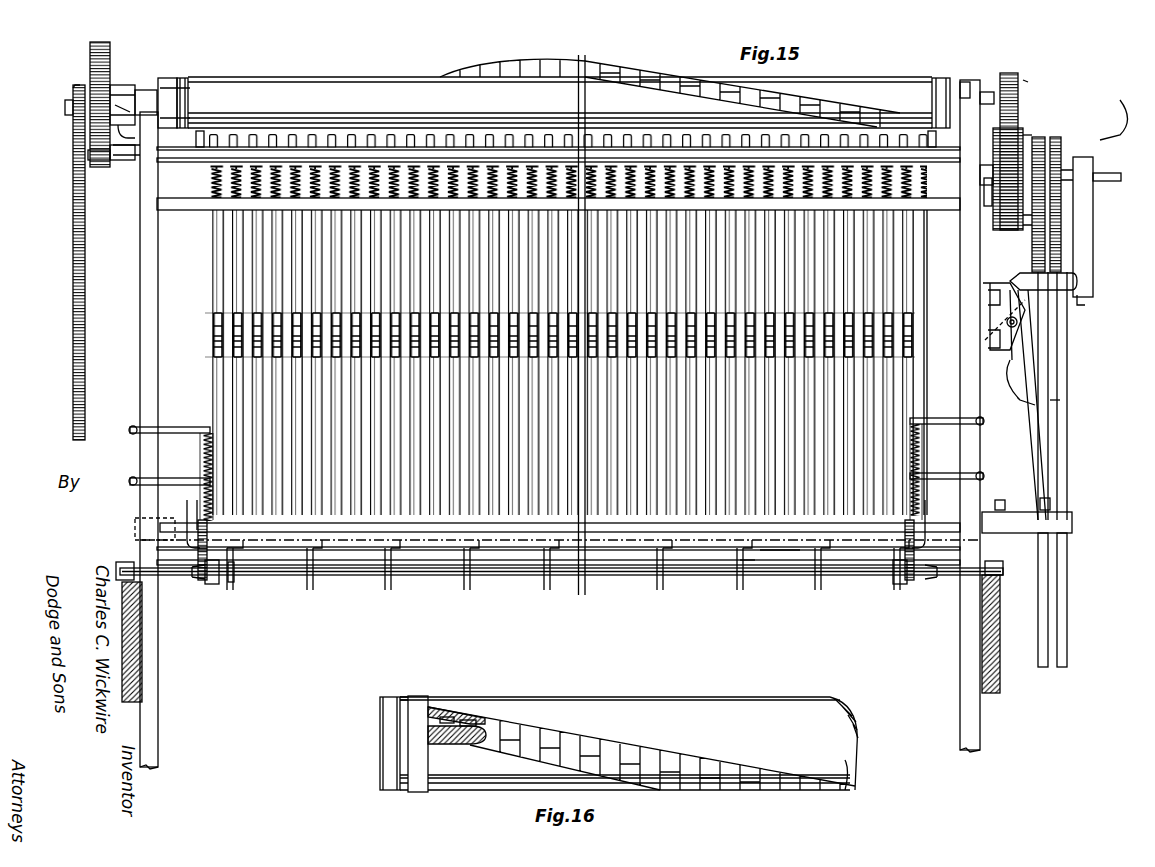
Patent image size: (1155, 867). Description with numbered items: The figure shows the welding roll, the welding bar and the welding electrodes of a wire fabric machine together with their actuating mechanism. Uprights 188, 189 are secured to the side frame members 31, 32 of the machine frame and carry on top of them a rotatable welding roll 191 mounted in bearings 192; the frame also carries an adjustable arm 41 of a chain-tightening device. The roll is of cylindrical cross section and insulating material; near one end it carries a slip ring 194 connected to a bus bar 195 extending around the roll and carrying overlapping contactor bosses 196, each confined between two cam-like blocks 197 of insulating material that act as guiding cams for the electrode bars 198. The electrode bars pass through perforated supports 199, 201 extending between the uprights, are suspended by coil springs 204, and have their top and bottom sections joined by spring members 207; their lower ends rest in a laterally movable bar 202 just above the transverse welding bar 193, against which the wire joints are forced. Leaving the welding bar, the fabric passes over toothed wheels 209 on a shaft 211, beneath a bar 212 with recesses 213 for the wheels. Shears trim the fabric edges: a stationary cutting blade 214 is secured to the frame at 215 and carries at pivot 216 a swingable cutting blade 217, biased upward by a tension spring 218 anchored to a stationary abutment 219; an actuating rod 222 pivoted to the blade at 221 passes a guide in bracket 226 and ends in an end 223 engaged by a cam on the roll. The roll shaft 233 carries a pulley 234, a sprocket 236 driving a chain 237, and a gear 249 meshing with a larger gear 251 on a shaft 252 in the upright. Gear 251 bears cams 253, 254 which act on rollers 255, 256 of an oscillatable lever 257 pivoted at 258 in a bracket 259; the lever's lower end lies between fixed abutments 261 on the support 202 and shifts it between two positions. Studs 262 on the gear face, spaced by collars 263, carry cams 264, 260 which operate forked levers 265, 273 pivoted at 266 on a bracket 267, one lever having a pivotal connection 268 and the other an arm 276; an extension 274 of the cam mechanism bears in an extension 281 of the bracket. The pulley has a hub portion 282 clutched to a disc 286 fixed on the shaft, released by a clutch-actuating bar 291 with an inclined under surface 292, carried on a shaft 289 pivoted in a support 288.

In FIG. 15, the side frame member 31 is at (980, 665).
In FIG. 15, the side frame member 32 is at (140, 660).
In FIG. 15, the frame post 41 is at (158, 719).
In FIG. 15, the upright 188 is at (140, 268).
In FIG. 15, the upright 189 is at (962, 318).
In FIG. 15, the welding roll 191 is at (897, 77).
In FIG. 16, the welding roll 191 is at (702, 698).
In FIG. 15, the bearings 192 is at (186, 82).
In FIG. 15, the welding bar 193 is at (618, 575).
In FIG. 15, the slip ring 194 is at (180, 100).
In FIG. 16, the slip ring 194 is at (418, 792).
In FIG. 16, the bus bar 195 is at (445, 710).
In FIG. 15, the contactor bosses 196 is at (700, 85).
In FIG. 16, the contactor bosses 196 is at (470, 720).
In FIG. 15, the cam-like blocks 197 is at (700, 90).
In FIG. 16, the cam-like blocks 197 is at (660, 735).
In FIG. 15, the electrode bars 198 is at (262, 246).
In FIG. 15, the perforated support 199 is at (330, 150).
In FIG. 15, the perforated support 201 is at (160, 205).
In FIG. 15, the laterally movable bar 202 is at (160, 525).
In FIG. 15, the coil springs 204 is at (206, 183).
In FIG. 15, the spring members 207 is at (212, 331).
In FIG. 15, the toothed wheels 209 is at (310, 585).
In FIG. 15, the shaft 211 is at (828, 568).
In FIG. 15, the bar 212 is at (782, 560).
In FIG. 15, the recesses 213 is at (745, 580).
In FIG. 15, the stationary cutting blade 214 is at (216, 585).
In FIG. 15, the securing point 215 is at (140, 568).
In FIG. 15, the pivot 216 is at (197, 580).
In FIG. 15, the swingable cutting blade 217 is at (207, 528).
In FIG. 15, the tension spring 218 is at (203, 458).
In FIG. 15, the stationary abutment 219 is at (176, 427).
In FIG. 15, the pivot 221 is at (190, 520).
In FIG. 15, the actuating rod 222 is at (140, 368).
In FIG. 15, the end 223 is at (202, 131).
In FIG. 15, the bracket 226 is at (165, 478).
In FIG. 15, the shaft 233 is at (65, 107).
In FIG. 15, the pulley 234 is at (95, 65).
In FIG. 15, the sprocket 236 is at (80, 86).
In FIG. 15, the chain 237 is at (73, 295).
In FIG. 15, the gear 249 is at (1010, 73).
In FIG. 15, the gear 251 is at (1000, 130).
In FIG. 15, the shaft 252 is at (985, 177).
In FIG. 15, the cam 253 is at (1028, 128).
In FIG. 15, the cam 254 is at (1018, 93).
In FIG. 15, the roller 255 is at (985, 205).
In FIG. 15, the roller 256 is at (1078, 279).
In FIG. 15, the oscillatable lever 257 is at (1030, 368).
In FIG. 15, the pivot 258 is at (1025, 330).
In FIG. 15, the bracket 259 is at (1060, 404).
In FIG. 15, the cam 260 is at (1070, 180).
In FIG. 15, the fixed abutments 261 is at (1005, 505).
In FIG. 15, the studs 262 is at (1045, 140).
In FIG. 15, the collars 263 is at (1058, 140).
In FIG. 15, the cam 264 is at (1085, 165).
In FIG. 15, the forked lever 265 is at (1068, 428).
In FIG. 15, the pivot 266 is at (1030, 305).
In FIG. 15, the bracket 267 is at (1040, 325).
In FIG. 15, the pivot 268 is at (1030, 222).
In FIG. 15, the forked lever 273 is at (1050, 395).
In FIG. 15, the extension 274 is at (1123, 179).
In FIG. 15, the arm 276 is at (1112, 297).
In FIG. 15, the extension 281 is at (1118, 114).
In FIG. 15, the hub portion 282 is at (115, 112).
In FIG. 15, the disc 286 is at (146, 90).
In FIG. 15, the support 288 is at (88, 156).
In FIG. 15, the shaft 289 is at (120, 135).
In FIG. 15, the clutch-actuating bar 291 is at (120, 160).
In FIG. 15, the inclined under surface 292 is at (122, 85).